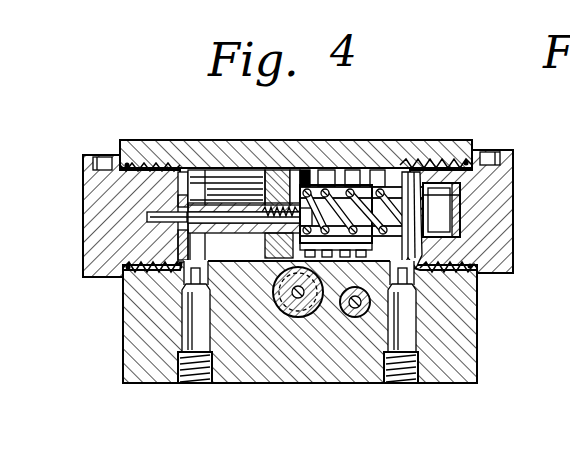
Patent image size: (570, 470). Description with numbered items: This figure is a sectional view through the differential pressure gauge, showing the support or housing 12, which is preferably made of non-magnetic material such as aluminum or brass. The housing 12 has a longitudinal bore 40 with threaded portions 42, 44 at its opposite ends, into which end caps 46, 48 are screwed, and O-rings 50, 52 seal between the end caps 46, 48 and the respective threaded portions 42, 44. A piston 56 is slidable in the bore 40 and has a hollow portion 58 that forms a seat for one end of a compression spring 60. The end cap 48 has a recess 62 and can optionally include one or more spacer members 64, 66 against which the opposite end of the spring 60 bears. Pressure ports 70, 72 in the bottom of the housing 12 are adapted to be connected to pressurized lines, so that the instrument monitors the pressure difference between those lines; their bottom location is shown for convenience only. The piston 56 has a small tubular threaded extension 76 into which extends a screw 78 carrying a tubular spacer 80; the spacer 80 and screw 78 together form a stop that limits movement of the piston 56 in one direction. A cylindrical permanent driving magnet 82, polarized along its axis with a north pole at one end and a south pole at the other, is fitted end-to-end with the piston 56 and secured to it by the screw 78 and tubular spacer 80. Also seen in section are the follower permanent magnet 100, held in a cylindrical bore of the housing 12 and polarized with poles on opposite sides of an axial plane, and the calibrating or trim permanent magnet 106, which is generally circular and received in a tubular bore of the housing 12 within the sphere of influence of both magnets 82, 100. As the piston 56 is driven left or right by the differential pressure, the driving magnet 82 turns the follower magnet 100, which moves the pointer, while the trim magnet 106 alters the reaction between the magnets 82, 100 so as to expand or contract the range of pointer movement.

The support or housing 12 is at (134, 369).
The longitudinal bore 40 is at (260, 262).
The threaded portion 42 is at (191, 262).
The threaded portion 44 is at (463, 270).
The end cap 46 is at (84, 228).
The end cap 48 is at (505, 233).
The O-ring 50 is at (128, 162).
The O-ring 52 is at (470, 160).
The piston 56 is at (346, 198).
The hollow portion 58 is at (344, 194).
The compression spring 60 is at (400, 183).
The recess 62 is at (430, 192).
The spacer member 64 is at (460, 191).
The spacer member 66 is at (458, 212).
The pressure port 70 is at (203, 380).
The pressure port 72 is at (405, 380).
The tubular threaded extension 76 is at (284, 168).
The screw 78 is at (220, 232).
The tubular spacer 80 is at (218, 235).
The driving magnet 82 is at (270, 167).
The follower permanent magnet 100 is at (300, 313).
The calibrating or trim permanent magnet 106 is at (357, 311).